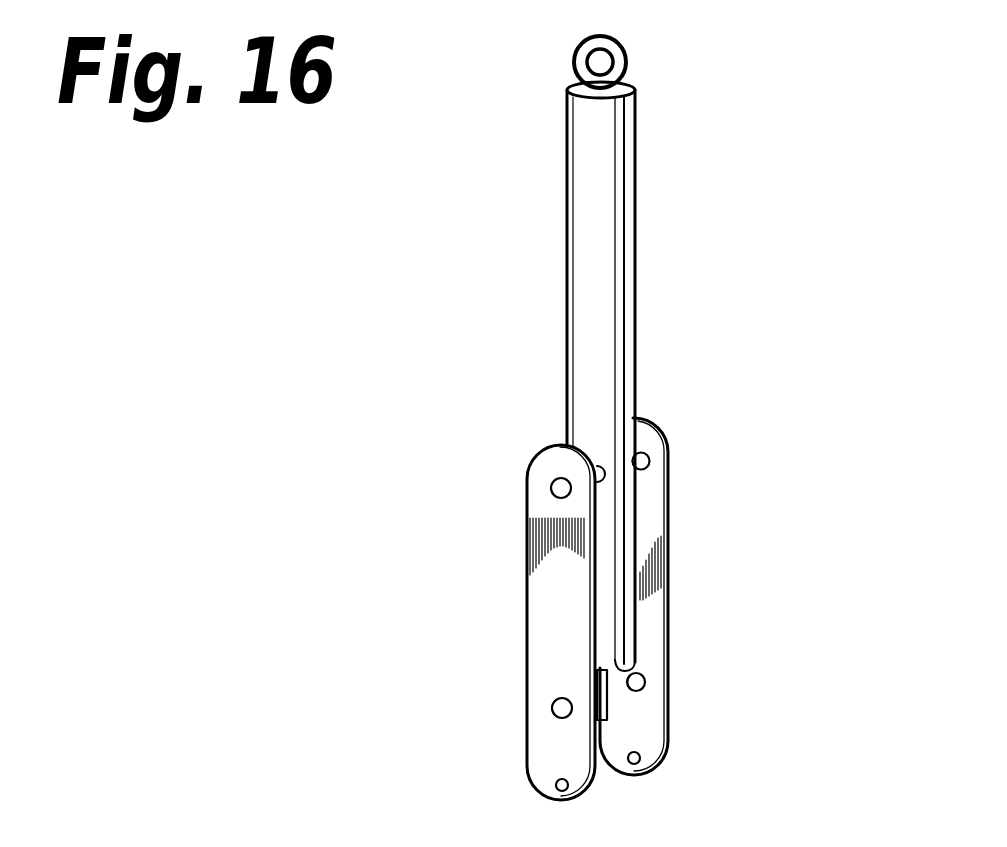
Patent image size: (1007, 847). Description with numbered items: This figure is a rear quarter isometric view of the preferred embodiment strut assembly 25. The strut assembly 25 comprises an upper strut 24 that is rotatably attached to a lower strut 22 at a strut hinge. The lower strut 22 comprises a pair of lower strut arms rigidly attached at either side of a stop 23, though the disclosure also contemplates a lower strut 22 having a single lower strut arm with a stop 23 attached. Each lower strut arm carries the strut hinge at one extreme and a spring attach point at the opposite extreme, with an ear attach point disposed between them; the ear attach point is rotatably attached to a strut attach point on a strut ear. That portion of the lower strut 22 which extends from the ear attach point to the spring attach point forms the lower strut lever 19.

The strut assembly 25 is at (290, 329).
The upper strut 24 is at (598, 233).
The lower strut lever 19 is at (560, 747).
The lower strut 22 is at (649, 504).
The stop 23 is at (606, 700).